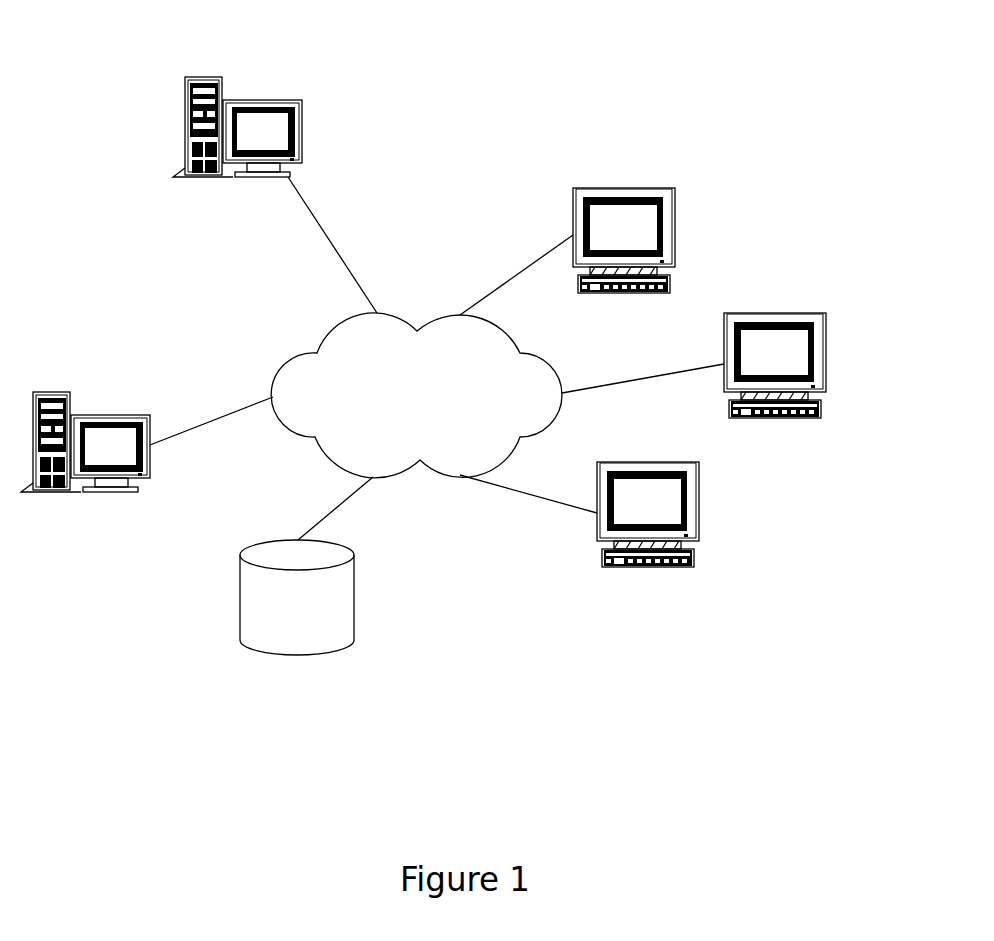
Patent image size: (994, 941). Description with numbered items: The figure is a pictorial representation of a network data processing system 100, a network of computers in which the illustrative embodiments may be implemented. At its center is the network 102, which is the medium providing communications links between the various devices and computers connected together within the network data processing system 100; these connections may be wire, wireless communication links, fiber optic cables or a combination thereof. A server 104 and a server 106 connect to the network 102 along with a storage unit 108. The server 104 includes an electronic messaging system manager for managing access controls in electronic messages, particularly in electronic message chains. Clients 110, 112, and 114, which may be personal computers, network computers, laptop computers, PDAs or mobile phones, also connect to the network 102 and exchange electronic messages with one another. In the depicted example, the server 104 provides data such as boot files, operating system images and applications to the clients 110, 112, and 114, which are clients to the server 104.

The network data processing system 100 is at (548, 555).
The network 102 is at (442, 391).
The server 104 is at (110, 418).
The server 106 is at (260, 100).
The storage unit 108 is at (355, 597).
The client 110 is at (623, 190).
The client 112 is at (773, 313).
The client 114 is at (700, 512).